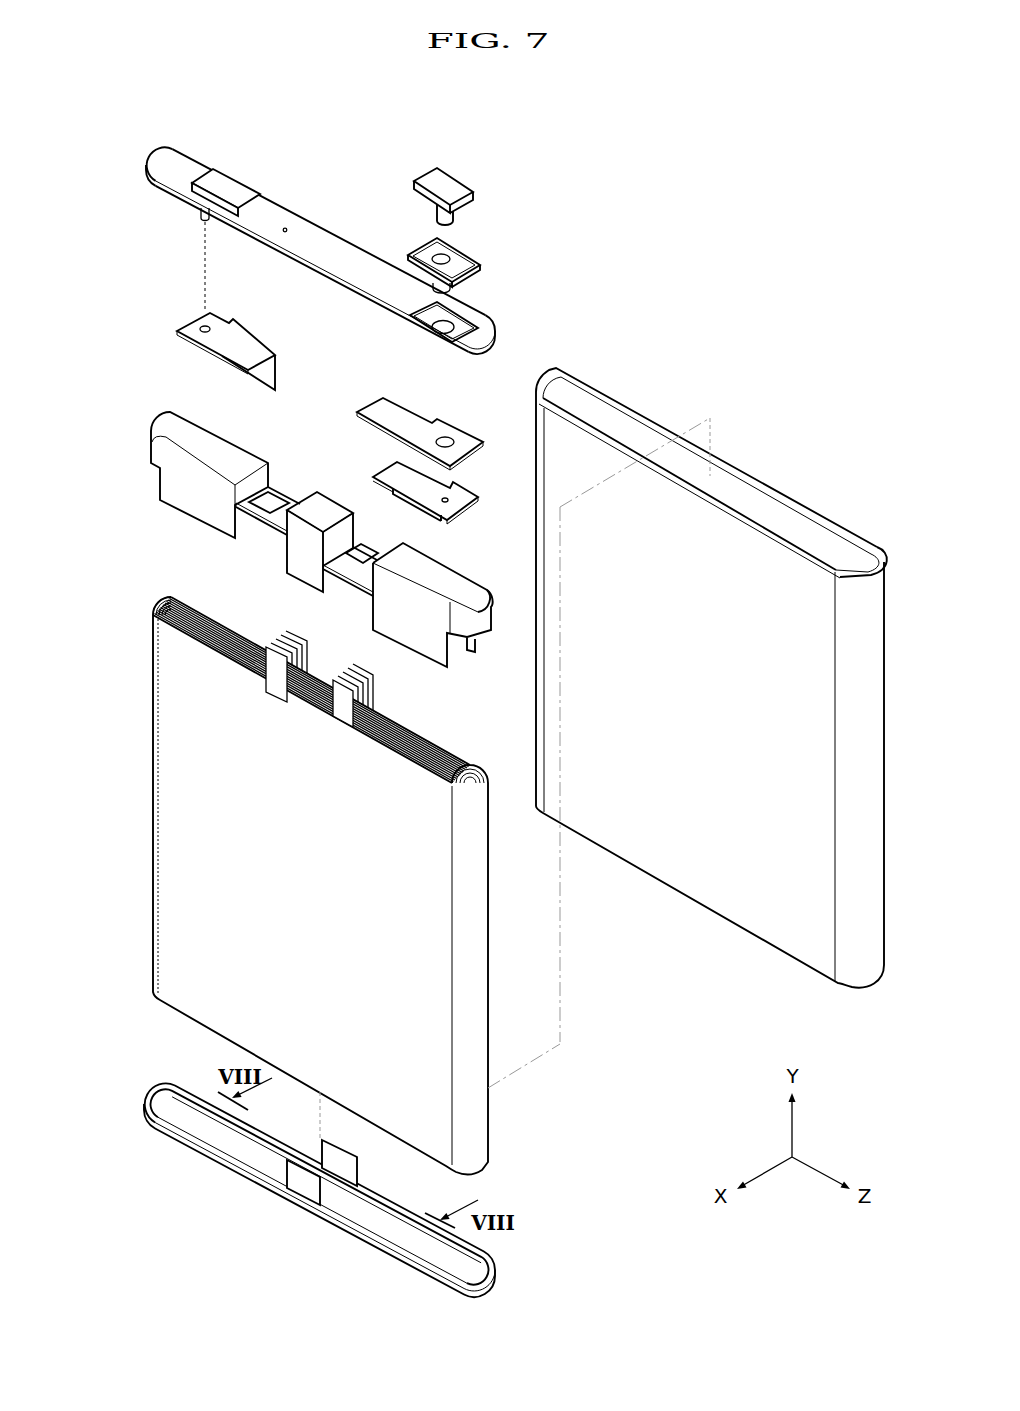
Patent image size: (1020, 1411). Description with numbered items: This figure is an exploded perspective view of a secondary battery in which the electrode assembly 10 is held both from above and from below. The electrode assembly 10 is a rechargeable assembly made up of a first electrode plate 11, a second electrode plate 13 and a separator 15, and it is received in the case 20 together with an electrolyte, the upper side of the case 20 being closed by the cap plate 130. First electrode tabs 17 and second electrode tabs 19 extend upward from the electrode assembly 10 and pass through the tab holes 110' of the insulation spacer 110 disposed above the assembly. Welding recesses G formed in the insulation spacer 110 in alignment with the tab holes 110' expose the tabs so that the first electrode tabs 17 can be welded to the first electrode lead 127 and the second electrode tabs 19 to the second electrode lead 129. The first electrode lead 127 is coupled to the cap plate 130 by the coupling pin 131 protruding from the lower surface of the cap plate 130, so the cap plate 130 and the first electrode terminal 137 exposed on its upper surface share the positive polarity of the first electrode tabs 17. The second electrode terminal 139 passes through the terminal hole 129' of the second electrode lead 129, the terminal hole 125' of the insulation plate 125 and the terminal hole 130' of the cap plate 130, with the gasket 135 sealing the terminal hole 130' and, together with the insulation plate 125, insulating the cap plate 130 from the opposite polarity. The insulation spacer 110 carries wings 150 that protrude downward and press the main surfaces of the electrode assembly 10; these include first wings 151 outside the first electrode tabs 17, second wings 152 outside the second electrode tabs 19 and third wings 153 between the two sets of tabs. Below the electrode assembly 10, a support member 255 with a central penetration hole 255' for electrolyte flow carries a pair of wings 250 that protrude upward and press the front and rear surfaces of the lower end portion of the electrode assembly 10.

The electrode assembly 10 is at (81, 566).
The first electrode plate 11 is at (151, 616).
The second electrode plate 13 is at (156, 605).
The separator 15 is at (153, 610).
The first electrode tabs 17 is at (276, 683).
The second electrode tabs 19 is at (344, 718).
The case 20 is at (784, 496).
The insulation spacer 110 is at (222, 480).
The tab holes 110' is at (285, 470).
The insulation plate 125 is at (437, 429).
The terminal hole 125' is at (445, 407).
The first electrode lead 127 is at (190, 323).
The second electrode lead 129 is at (449, 497).
The terminal hole 129' is at (481, 480).
The cap plate 130 is at (287, 219).
The terminal hole 130' is at (475, 311).
The coupling pin 131 is at (198, 214).
The gasket 135 is at (466, 255).
The first electrode terminal 137 is at (237, 185).
The second electrode terminal 139 is at (458, 181).
The wings 150 is at (132, 480).
The first wings 151 is at (196, 516).
The second wings 152 is at (412, 644).
The third wings 153 is at (306, 578).
The welding recesses G is at (362, 550).
The wings 250 is at (305, 1182).
The support member 255 is at (278, 1156).
The penetration hole 255' is at (320, 1186).